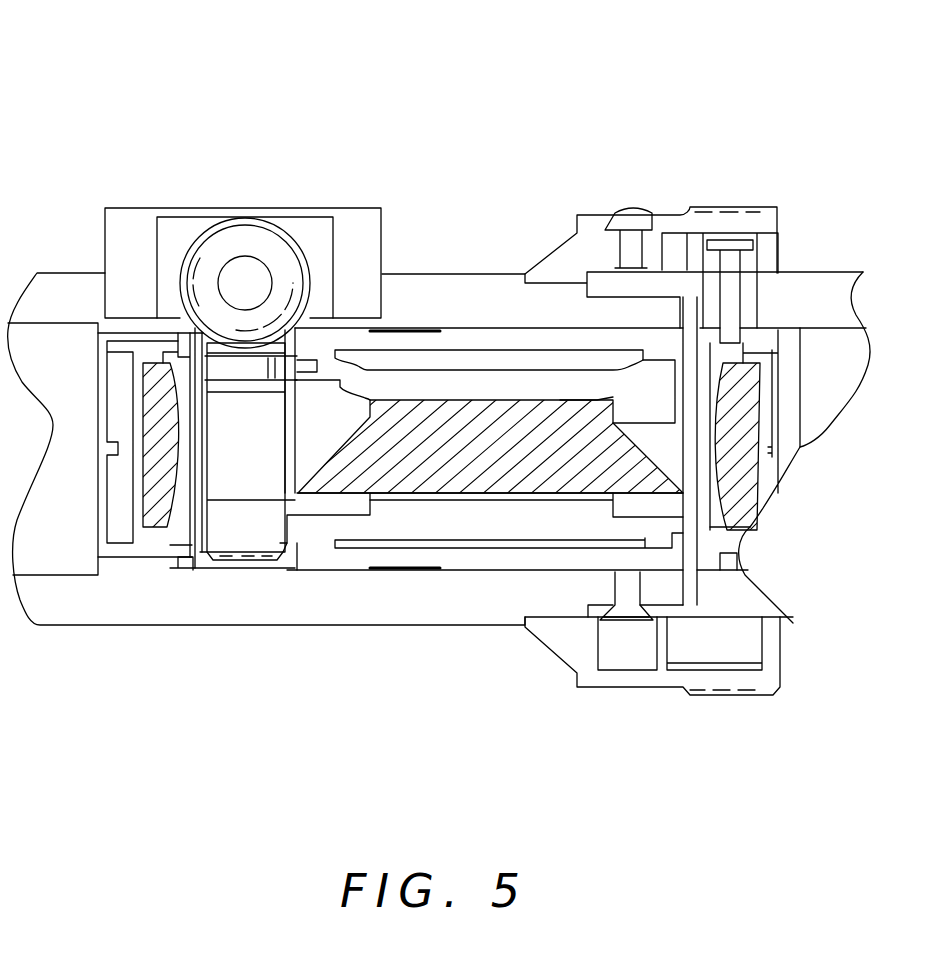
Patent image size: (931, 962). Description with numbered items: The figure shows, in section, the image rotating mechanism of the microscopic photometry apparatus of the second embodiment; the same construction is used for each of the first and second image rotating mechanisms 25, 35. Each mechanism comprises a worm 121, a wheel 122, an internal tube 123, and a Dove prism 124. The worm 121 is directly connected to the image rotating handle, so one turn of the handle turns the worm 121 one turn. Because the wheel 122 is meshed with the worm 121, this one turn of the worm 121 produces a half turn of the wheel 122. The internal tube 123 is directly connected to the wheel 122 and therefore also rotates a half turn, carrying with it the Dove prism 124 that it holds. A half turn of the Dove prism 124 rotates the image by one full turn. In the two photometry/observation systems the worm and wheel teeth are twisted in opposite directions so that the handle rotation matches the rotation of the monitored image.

The first image rotating mechanism 25 is at (439, 380).
The second image rotating mechanism 35 is at (439, 426).
The worm 121 is at (287, 240).
The wheel 122 is at (245, 537).
The internal tube 123 is at (323, 532).
The Dove prism 124 is at (460, 482).